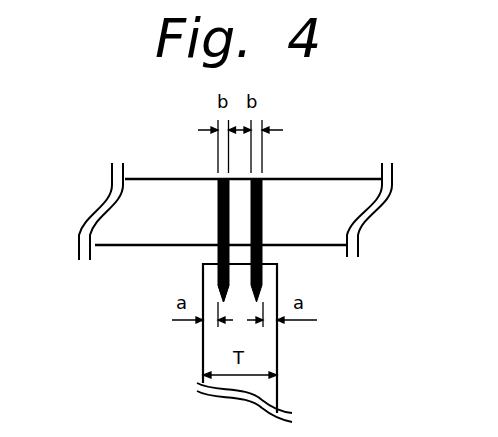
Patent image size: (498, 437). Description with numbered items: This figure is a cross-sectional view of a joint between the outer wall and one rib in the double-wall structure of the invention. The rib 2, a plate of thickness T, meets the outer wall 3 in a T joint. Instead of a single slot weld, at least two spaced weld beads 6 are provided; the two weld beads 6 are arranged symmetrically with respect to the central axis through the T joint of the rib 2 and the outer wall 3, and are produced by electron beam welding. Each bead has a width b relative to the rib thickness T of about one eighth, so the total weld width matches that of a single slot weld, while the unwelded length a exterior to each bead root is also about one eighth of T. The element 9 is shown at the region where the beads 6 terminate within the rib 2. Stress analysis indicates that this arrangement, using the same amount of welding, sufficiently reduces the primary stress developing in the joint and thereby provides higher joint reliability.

The rib 2 is at (215, 351).
The outer wall 3 is at (139, 193).
The weld beads 6 is at (262, 198).
The pin tips 9 is at (218, 250).